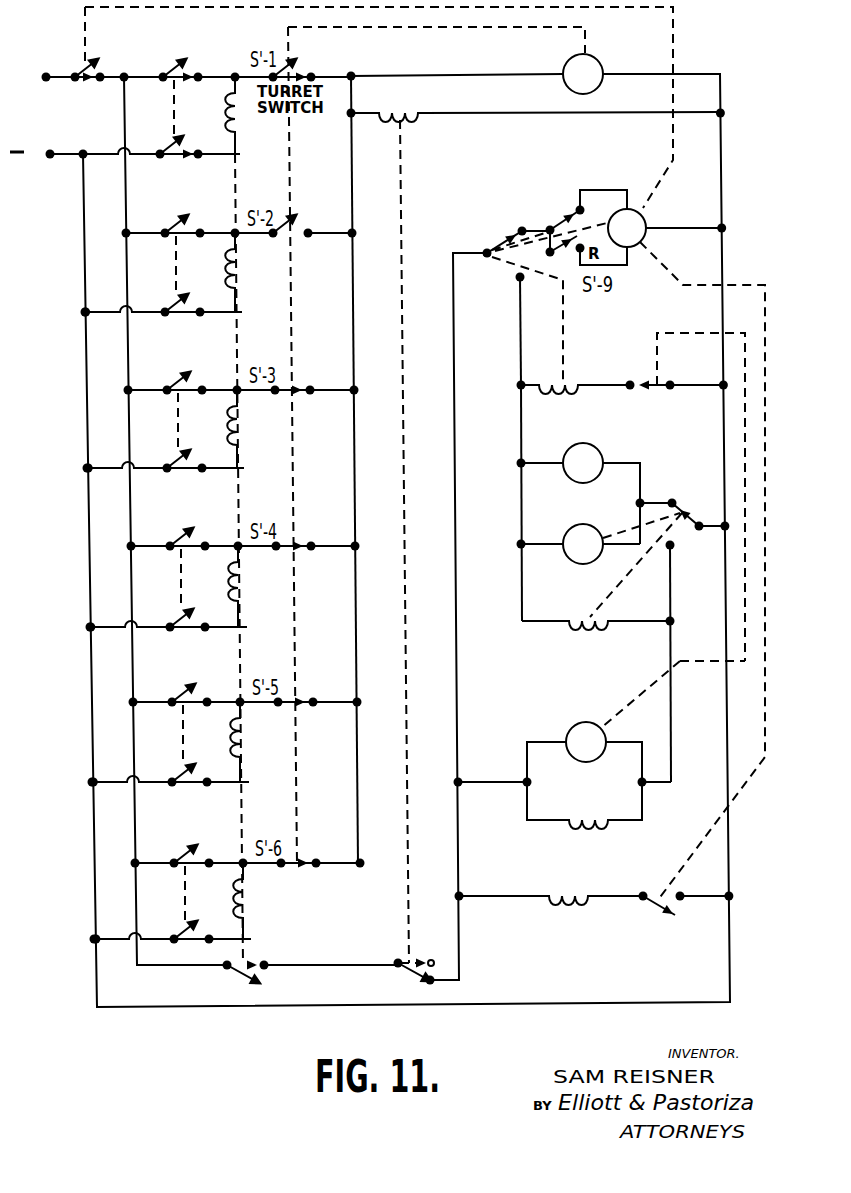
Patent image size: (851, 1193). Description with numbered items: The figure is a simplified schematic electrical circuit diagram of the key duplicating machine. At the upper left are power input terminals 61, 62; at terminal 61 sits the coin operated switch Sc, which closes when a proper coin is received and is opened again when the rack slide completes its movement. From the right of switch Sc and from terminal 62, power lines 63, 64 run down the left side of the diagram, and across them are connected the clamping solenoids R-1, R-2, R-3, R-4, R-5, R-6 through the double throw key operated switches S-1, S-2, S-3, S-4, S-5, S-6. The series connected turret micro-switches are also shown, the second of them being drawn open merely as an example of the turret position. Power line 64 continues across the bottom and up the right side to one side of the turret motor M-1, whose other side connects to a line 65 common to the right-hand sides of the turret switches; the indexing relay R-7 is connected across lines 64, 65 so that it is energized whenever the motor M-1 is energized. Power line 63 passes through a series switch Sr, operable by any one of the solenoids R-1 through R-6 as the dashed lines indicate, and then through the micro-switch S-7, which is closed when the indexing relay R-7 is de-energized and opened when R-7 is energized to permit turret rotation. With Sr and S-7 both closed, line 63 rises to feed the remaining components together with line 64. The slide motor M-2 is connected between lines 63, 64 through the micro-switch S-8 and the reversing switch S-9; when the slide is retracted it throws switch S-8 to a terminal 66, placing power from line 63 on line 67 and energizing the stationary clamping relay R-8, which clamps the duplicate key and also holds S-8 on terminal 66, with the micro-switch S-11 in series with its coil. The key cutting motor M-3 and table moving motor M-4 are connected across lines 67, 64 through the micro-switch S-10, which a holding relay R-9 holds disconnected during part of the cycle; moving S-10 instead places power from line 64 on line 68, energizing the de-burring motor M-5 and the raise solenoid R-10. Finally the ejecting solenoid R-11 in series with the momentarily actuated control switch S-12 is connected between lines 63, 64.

The power input terminal 61 is at (46, 77).
The power input terminal 62 is at (50, 156).
The power line 63 is at (125, 173).
The power line 64 is at (85, 210).
The line 65 is at (352, 320).
The terminal 66 is at (518, 281).
The line 67 is at (522, 428).
The line 68 is at (675, 722).
The coin operated switch Sc is at (85, 86).
The key operated switch S-1 is at (180, 120).
The key operated switch S-2 is at (162, 262).
The key operated switch S-3 is at (164, 418).
The key operated switch S-4 is at (167, 576).
The key operated switch S-5 is at (169, 731).
The key operated switch S-6 is at (171, 890).
The micro-switch S-7 is at (403, 982).
The micro-switch S-8 is at (505, 236).
The reversing switch S-9 is at (560, 226).
The micro-switch S-10 is at (681, 507).
The micro-switch S-11 is at (675, 399).
The control switch S-12 is at (684, 918).
The switch Sr is at (241, 983).
The clamping solenoid R-1 is at (250, 114).
The clamping solenoid R-2 is at (251, 271).
The clamping solenoid R-3 is at (253, 427).
The clamping solenoid R-4 is at (254, 585).
The clamping solenoid R-5 is at (256, 740).
The clamping solenoid R-6 is at (259, 899).
The indexing relay R-7 is at (534, 119).
The stationary clamping solenoid R-8 is at (582, 372).
The holding relay R-9 is at (586, 645).
The raise solenoid R-10 is at (610, 826).
The ejecting solenoid R-11 is at (549, 902).
The turret motor M-1 is at (477, 60).
The slide motor M-2 is at (651, 227).
The key cutting motor M-3 is at (598, 480).
The table moving motor M-4 is at (579, 562).
The de-burring motor M-5 is at (563, 771).